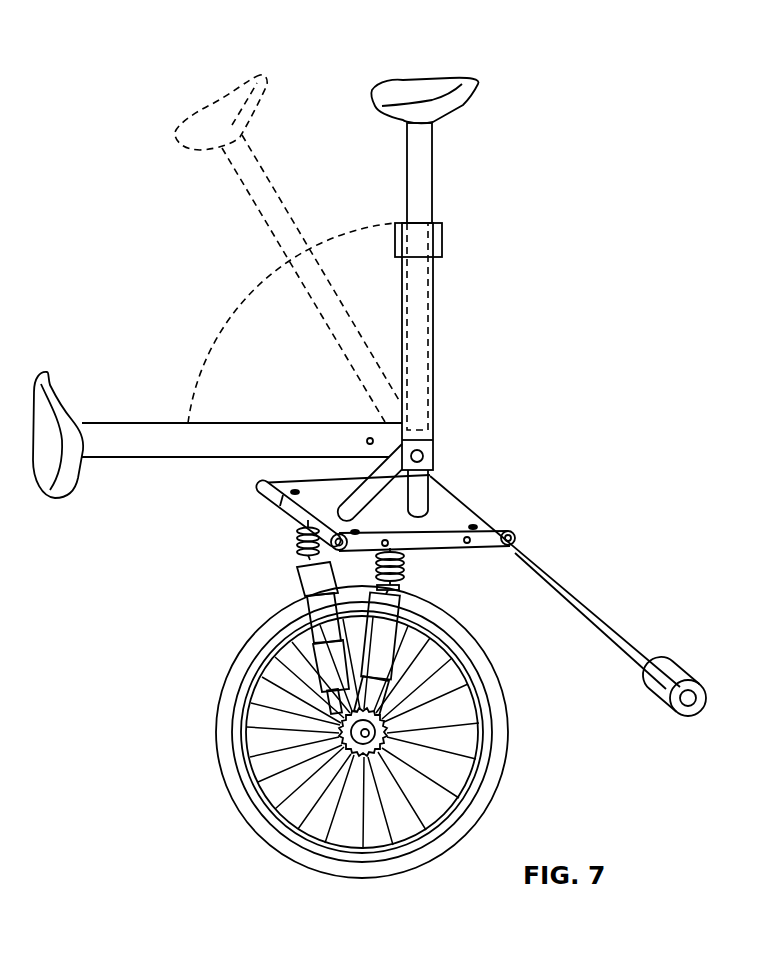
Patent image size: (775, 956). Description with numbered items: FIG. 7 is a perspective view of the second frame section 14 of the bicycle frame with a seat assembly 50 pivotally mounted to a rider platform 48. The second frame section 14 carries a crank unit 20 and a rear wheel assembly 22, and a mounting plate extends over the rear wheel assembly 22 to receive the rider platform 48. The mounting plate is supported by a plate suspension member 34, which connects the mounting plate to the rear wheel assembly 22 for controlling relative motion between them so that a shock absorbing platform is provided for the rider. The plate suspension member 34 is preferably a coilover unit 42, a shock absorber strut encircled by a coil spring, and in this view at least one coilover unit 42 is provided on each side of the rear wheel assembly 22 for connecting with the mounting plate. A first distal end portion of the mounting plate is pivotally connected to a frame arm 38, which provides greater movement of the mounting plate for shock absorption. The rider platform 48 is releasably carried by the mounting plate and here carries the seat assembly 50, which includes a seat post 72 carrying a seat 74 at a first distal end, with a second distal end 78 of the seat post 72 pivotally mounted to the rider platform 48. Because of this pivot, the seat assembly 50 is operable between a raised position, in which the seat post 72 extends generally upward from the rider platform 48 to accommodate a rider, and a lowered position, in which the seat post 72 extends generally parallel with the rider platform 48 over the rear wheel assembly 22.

The second frame section 14 is at (545, 548).
The crank unit 20 is at (680, 670).
The rear wheel assembly 22 is at (233, 696).
The plate suspension member 34 is at (407, 587).
The frame arm 38 is at (575, 597).
The coilover unit 42 is at (307, 593).
The rider platform 48 is at (455, 517).
The seat assembly 50 is at (435, 325).
The seat post 72 is at (420, 180).
The seat 74 is at (437, 88).
The second distal end 78 is at (428, 456).